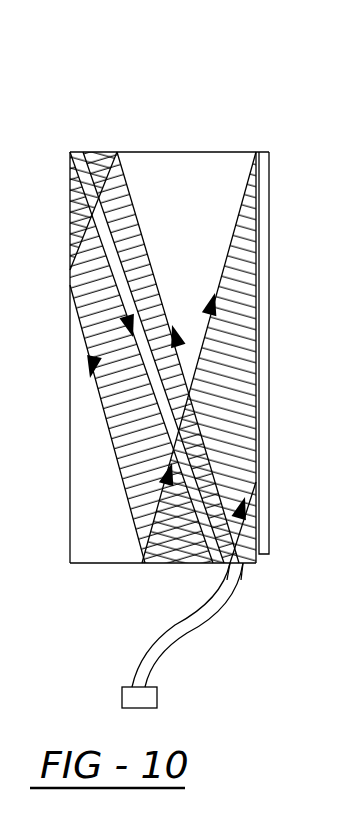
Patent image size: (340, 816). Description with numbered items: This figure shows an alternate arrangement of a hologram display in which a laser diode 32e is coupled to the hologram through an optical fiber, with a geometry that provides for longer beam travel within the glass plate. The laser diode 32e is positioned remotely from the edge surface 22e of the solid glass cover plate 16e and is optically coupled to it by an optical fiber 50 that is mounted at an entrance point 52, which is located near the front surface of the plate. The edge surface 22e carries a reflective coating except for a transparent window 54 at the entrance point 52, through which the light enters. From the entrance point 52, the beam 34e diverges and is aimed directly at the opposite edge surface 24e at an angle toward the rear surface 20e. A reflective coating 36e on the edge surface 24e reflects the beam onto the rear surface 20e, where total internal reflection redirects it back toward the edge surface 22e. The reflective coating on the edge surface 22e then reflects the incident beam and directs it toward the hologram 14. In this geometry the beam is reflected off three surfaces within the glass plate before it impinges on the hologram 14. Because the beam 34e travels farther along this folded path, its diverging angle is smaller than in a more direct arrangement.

The solid glass cover plate 16e is at (220, 158).
The edge surface 24e is at (150, 150).
The reflective coating 36e is at (118, 152).
The beam 34e is at (143, 260).
The rear surface 20e is at (69, 383).
The edge surface 22e is at (98, 563).
The hologram 14 is at (262, 257).
The optical fiber 50 is at (230, 600).
The entrance point 52 is at (247, 568).
The transparent window 54 is at (230, 570).
The laser diode 32e is at (158, 692).